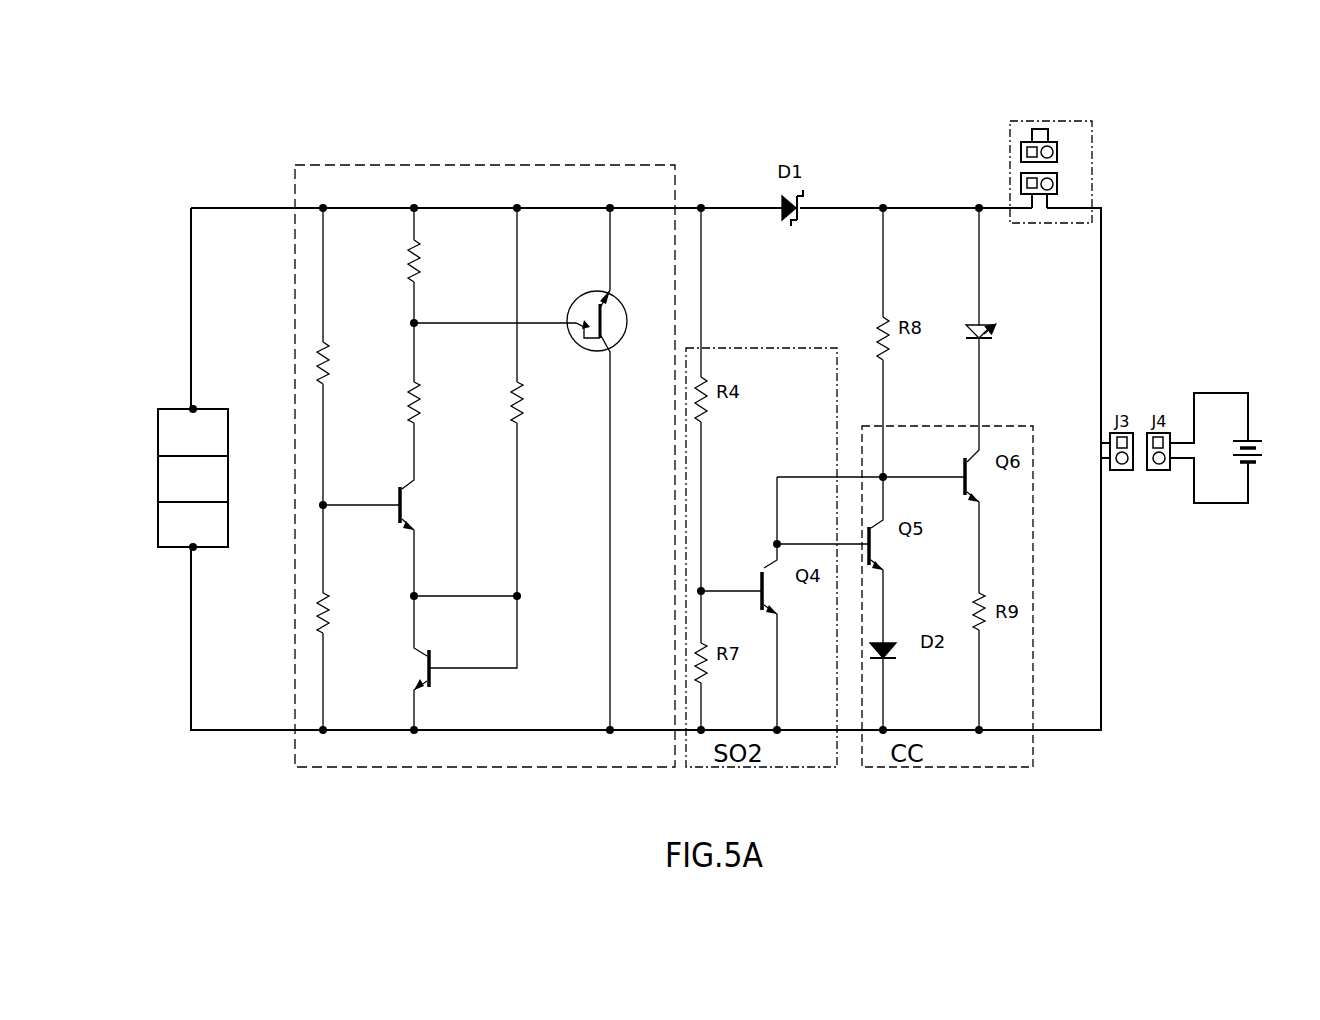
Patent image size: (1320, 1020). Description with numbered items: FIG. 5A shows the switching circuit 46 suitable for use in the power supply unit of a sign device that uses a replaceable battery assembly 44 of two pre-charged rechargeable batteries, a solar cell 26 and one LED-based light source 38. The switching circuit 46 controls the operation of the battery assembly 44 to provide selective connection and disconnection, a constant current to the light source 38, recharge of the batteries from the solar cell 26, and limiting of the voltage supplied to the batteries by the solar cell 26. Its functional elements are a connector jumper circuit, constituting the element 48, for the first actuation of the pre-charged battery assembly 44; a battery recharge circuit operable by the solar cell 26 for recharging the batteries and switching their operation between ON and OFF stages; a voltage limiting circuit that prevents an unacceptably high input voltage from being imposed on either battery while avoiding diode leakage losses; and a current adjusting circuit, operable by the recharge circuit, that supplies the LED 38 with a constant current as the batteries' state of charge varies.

The solar cell 26 is at (170, 520).
The LED-based light source 38 is at (987, 317).
The battery assembly 44 is at (1222, 400).
The switching circuit 46 is at (254, 155).
The connector jumper circuit 48 is at (1080, 197).